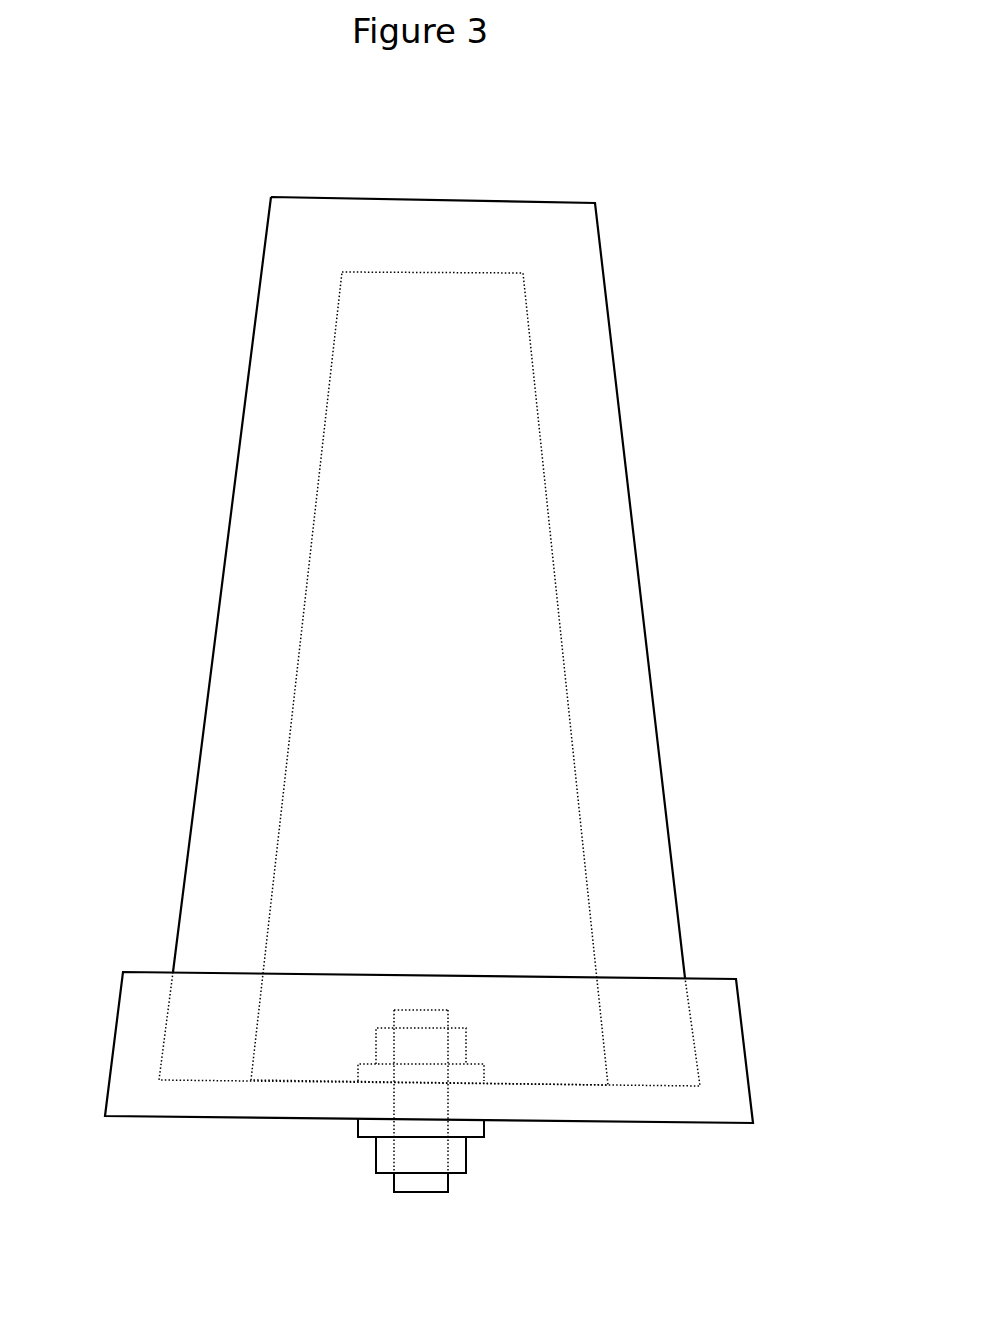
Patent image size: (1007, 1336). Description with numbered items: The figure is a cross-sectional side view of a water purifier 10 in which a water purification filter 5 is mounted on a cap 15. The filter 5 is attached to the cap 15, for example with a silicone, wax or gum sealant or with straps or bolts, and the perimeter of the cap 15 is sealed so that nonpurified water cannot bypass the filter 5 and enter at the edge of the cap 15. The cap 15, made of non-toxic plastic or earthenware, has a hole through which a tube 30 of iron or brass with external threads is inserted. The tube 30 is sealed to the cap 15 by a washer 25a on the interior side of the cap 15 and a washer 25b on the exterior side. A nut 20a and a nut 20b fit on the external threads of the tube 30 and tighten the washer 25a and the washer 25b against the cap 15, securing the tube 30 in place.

The water purifier 10 is at (143, 484).
The water purification filter 5 is at (610, 322).
The cap 15 is at (746, 1036).
The nut 20a is at (467, 1045).
The washer 25a is at (486, 1073).
The washer 25b is at (488, 1132).
The nut 20b is at (468, 1162).
The tube 30 is at (405, 1195).